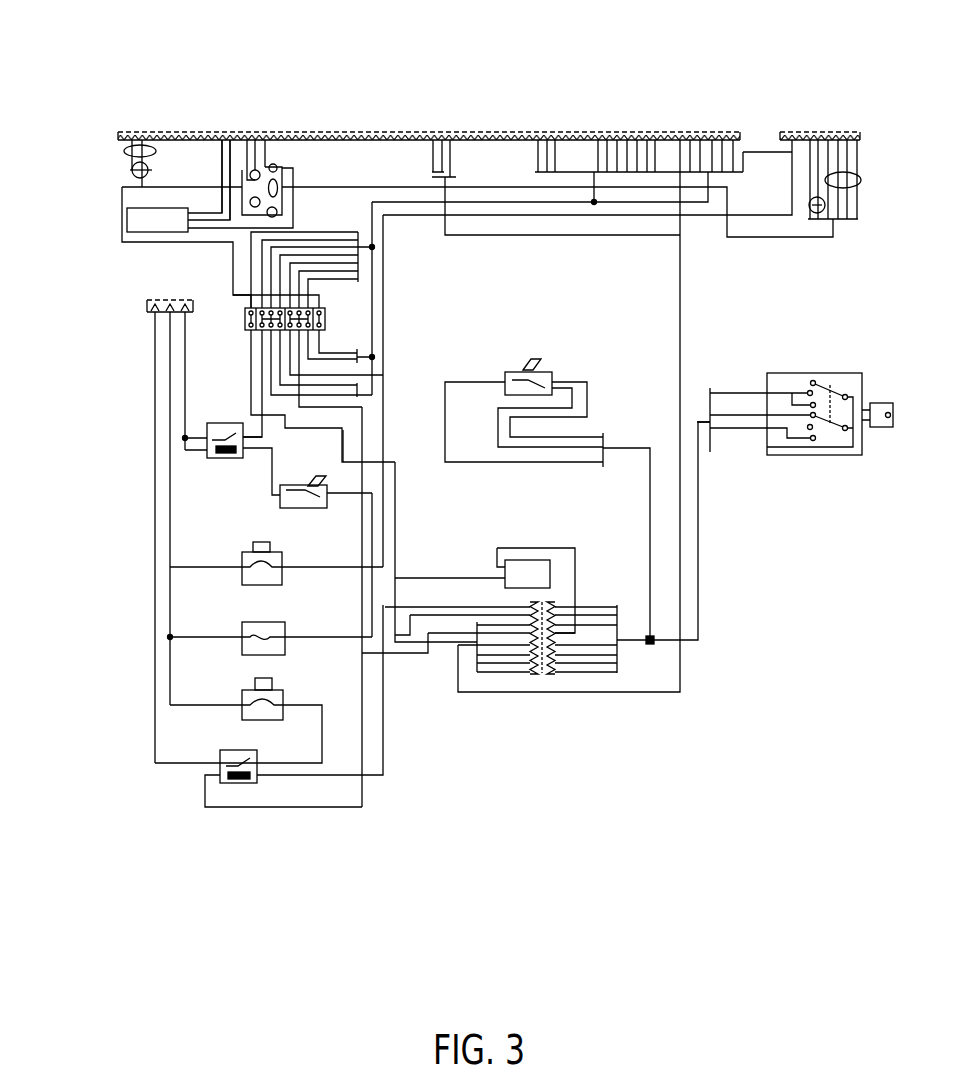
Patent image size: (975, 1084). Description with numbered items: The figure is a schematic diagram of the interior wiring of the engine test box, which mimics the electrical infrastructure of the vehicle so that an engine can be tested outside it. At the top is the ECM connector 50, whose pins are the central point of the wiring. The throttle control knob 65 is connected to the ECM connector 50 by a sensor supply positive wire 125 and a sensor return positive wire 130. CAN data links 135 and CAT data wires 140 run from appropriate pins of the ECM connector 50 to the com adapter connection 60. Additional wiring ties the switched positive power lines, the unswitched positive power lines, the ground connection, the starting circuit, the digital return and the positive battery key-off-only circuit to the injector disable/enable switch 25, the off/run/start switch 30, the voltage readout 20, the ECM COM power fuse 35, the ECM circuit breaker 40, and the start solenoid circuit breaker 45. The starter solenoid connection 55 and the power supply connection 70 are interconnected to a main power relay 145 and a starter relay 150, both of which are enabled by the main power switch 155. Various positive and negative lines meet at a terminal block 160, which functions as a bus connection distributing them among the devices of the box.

The voltage readout 20 is at (548, 568).
The injector disable/enable switch 25 is at (548, 375).
The off/run/start switch 30 is at (860, 455).
The ECM COM power fuse 35 is at (242, 626).
The ECM circuit breaker 40 is at (242, 556).
The start solenoid circuit breaker 45 is at (242, 694).
The ECM connector 50 is at (120, 132).
The starter solenoid connection 55 is at (148, 313).
The com adapter connection 60 is at (862, 134).
The throttle control knob 65 is at (133, 222).
The power supply connection 70 is at (189, 313).
The sensor supply positive wire 125 is at (236, 168).
The sensor return positive wire 130 is at (220, 165).
The CAN data links 135 is at (122, 158).
The CAT data wires 140 is at (130, 176).
The main power relay 145 is at (207, 428).
The starter relay 150 is at (220, 757).
The main power switch 155 is at (280, 500).
The terminal block 160 is at (326, 316).